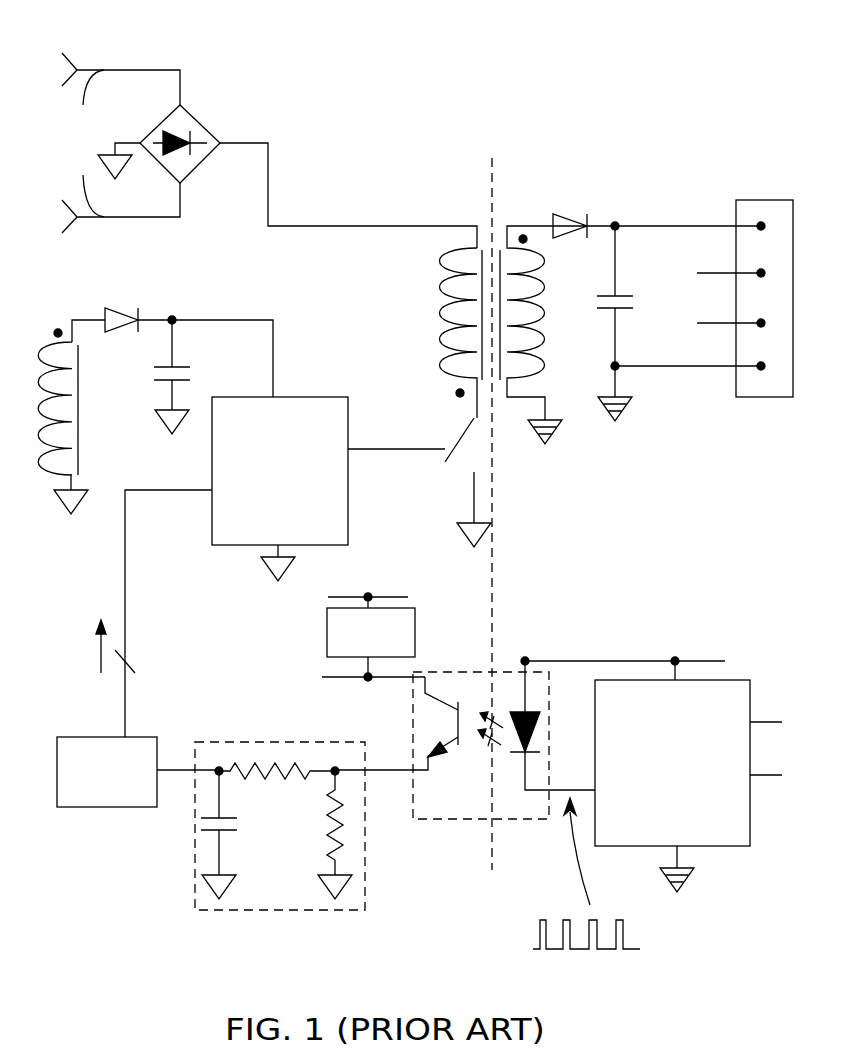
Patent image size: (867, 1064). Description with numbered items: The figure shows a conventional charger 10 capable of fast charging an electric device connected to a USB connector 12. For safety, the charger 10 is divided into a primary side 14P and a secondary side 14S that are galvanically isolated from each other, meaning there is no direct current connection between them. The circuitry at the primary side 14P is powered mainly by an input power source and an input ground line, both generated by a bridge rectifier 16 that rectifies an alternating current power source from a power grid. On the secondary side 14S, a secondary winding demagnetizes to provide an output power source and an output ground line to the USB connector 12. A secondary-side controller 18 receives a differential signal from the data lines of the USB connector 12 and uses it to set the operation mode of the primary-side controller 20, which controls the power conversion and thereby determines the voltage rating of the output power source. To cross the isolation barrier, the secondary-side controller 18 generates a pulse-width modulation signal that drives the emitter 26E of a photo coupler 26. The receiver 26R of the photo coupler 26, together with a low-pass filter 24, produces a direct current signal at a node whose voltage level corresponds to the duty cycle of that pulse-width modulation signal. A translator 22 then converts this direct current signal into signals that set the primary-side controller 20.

The charger 10 is at (456, 80).
The USB connector 12 is at (752, 198).
The primary side 14P is at (478, 180).
The secondary side 14S is at (505, 180).
The bridge rectifier 16 is at (188, 110).
The secondary-side controller 18 is at (686, 812).
The primary-side controller 20 is at (292, 509).
The translator 22 is at (121, 796).
The low-pass filter 24 is at (250, 742).
The photo coupler 26 is at (462, 820).
The receiver 26R is at (420, 740).
The emitter 26E is at (549, 740).